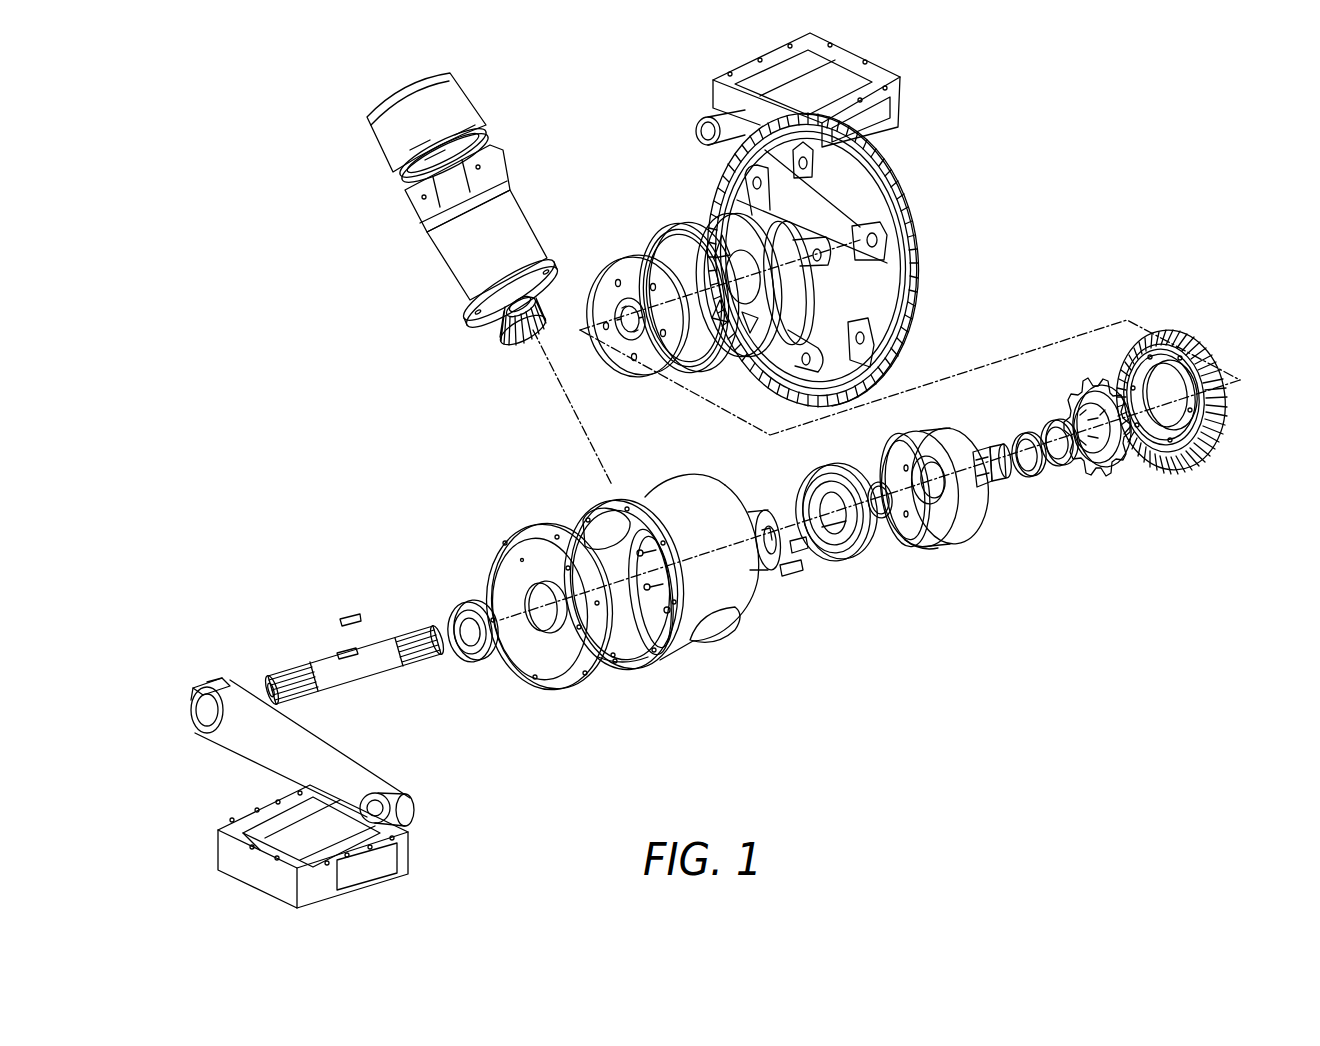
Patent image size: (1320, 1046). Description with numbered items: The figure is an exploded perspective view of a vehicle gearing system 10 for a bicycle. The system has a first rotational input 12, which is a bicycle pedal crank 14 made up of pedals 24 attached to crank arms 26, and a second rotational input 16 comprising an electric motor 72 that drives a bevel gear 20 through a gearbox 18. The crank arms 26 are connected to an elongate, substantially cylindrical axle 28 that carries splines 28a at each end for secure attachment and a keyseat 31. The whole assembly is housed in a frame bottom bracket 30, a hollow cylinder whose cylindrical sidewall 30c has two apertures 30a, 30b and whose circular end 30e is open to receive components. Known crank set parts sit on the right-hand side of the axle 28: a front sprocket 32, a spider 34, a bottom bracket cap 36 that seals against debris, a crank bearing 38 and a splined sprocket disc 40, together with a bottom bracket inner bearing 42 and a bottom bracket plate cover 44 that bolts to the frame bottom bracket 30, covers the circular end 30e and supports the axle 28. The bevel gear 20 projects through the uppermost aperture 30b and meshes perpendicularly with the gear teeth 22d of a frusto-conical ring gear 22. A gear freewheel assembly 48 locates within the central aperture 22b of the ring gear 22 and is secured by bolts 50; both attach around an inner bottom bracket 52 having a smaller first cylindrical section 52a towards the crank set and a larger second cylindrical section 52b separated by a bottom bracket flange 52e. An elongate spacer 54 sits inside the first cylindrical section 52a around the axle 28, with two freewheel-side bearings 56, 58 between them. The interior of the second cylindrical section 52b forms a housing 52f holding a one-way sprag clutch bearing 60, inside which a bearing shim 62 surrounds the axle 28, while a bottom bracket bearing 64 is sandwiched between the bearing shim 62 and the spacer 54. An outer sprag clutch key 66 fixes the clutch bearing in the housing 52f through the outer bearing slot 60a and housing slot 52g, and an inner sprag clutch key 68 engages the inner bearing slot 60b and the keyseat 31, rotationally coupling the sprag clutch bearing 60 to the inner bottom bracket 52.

The vehicle gearing system 10 is at (1058, 251).
The first rotational input 12 is at (304, 753).
The bicycle pedal crank 14 is at (300, 740).
The second rotational input 16 is at (510, 200).
The gearbox 18 is at (530, 245).
The bevel gear 20 is at (510, 335).
The ring gear 22 is at (1164, 388).
The central aperture 22b is at (1200, 460).
The gear teeth 22d is at (1125, 322).
The pedals 24 is at (215, 845).
The crank arms 26 is at (250, 745).
The axle 28 is at (352, 650).
The splines 28a is at (290, 670).
The frame bottom bracket 30 is at (664, 575).
The aperture 30a is at (715, 638).
The aperture 30b is at (598, 520).
The cylindrical sidewall 30c is at (640, 495).
The circular end 30e is at (630, 650).
The keyseat 31 is at (340, 652).
The front sprocket 32 is at (920, 300).
The spider 34 is at (812, 292).
The bottom bracket cap 36 is at (700, 228).
The crank bearing 38 is at (665, 236).
The splined sprocket disc 40 is at (624, 256).
The bottom bracket inner bearing 42 is at (475, 660).
The bottom bracket plate cover 44 is at (568, 690).
The gear freewheel assembly 48 is at (1122, 470).
The bolts 50 is at (668, 566).
The inner bottom bracket 52 is at (941, 490).
The first cylindrical section 52a is at (975, 455).
The second cylindrical section 52b is at (960, 520).
The bottom bracket flange 52e is at (945, 445).
The housing 52f is at (935, 532).
The housing slot 52g is at (903, 536).
The elongate spacer 54 is at (1000, 482).
The freewheel-side bearing 56 is at (1067, 468).
The freewheel-side bearing 58 is at (1036, 478).
The one-way sprag clutch bearing 60 is at (838, 517).
The outer bearing slot 60a is at (835, 556).
The inner bearing slot 60b is at (840, 545).
The bearing shim 62 is at (755, 525).
The bottom bracket bearing 64 is at (880, 484).
The outer sprag clutch key 66 is at (792, 580).
The inner sprag clutch key 68 is at (350, 615).
The electric motor 72 is at (462, 103).